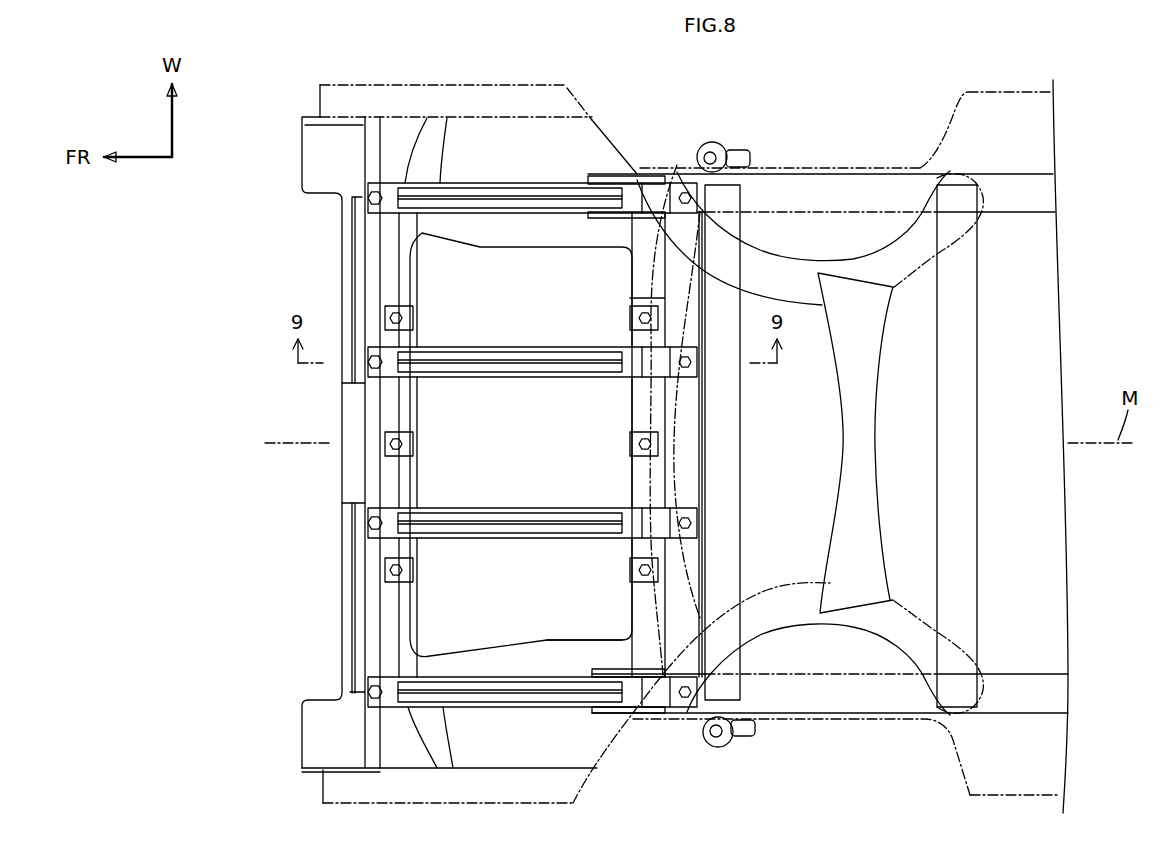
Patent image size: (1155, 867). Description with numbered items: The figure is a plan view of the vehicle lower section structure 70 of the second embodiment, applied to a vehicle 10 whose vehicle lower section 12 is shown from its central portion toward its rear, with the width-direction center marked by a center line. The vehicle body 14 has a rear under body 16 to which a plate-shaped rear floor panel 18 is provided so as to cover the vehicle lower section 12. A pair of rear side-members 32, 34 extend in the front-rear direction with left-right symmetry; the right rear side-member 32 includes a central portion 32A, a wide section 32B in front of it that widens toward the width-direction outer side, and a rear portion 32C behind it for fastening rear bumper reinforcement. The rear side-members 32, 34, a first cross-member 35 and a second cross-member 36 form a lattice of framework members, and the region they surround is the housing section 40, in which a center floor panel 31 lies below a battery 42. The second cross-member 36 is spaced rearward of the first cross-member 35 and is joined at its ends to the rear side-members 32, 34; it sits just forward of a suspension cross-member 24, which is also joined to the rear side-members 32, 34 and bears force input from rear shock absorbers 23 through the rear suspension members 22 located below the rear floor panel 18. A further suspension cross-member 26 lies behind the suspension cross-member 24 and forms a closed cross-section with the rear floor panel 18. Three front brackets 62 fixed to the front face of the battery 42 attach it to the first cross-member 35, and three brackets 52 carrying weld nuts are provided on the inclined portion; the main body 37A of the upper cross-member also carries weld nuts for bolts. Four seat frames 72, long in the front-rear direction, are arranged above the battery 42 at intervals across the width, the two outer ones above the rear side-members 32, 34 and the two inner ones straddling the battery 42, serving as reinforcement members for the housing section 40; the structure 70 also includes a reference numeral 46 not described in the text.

The vehicle 10 is at (1085, 186).
The vehicle lower section 12 is at (893, 730).
The vehicle body 14 is at (1000, 800).
The rear under body 16 is at (862, 722).
The rear floor panel 18 is at (823, 660).
The rear suspension member 22 is at (785, 576).
The rear shock absorber 23 is at (722, 143).
The suspension cross-member 24 is at (738, 388).
The suspension cross-member 26 is at (973, 435).
The center floor panel 31 is at (560, 226).
The rear side-member 32 is at (858, 190).
The central portion 32A is at (785, 190).
The wide section 32B is at (583, 133).
The rear portion 32C is at (1015, 187).
The rear side-member 34 is at (776, 703).
The first cross-member 35 is at (375, 611).
The second cross-member 36 is at (692, 458).
The main body 37A is at (375, 472).
The housing section 40 is at (665, 392).
The battery 42 is at (549, 643).
The floor plate 46 is at (518, 83).
The bracket 52 is at (644, 331).
The front bracket 62 is at (396, 306).
The vehicle lower section structure 70 is at (628, 733).
The seat frame 72 is at (498, 179).